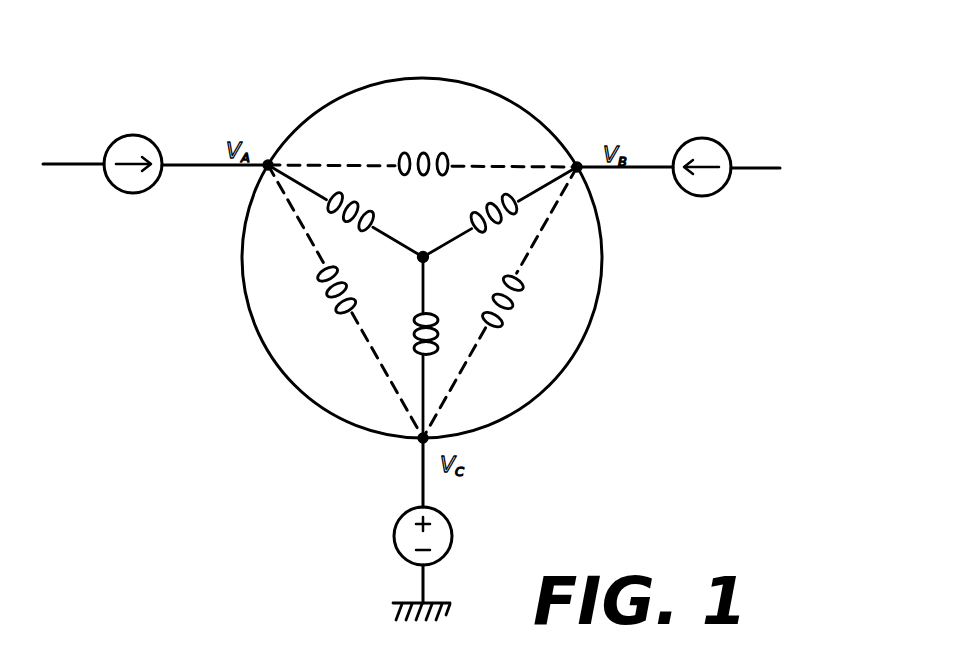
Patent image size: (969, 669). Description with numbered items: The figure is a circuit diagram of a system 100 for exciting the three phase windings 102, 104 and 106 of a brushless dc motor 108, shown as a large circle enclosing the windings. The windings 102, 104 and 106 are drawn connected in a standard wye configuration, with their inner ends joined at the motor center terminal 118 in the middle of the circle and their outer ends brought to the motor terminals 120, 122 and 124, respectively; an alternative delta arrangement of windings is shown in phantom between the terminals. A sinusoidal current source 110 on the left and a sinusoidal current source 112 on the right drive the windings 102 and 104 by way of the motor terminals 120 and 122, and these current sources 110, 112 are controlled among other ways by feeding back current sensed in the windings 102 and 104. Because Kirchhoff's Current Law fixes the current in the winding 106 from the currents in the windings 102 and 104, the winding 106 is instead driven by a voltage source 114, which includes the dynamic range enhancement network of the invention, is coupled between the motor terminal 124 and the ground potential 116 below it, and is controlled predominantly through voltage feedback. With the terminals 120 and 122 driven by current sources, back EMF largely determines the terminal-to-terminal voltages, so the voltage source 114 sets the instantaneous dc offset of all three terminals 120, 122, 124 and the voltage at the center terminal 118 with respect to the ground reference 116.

The system 100 is at (579, 37).
The phase winding 102 is at (372, 217).
The phase winding 104 is at (500, 226).
The phase winding 106 is at (412, 321).
The brushless dc motor 108 is at (490, 88).
The current source 110 is at (113, 186).
The current source 112 is at (722, 146).
The voltage source 114 is at (449, 524).
The ground potential 116 is at (449, 603).
The motor center terminal 118 is at (423, 257).
The motor terminal 120 is at (268, 165).
The motor terminal 122 is at (577, 167).
The motor terminal 124 is at (423, 438).